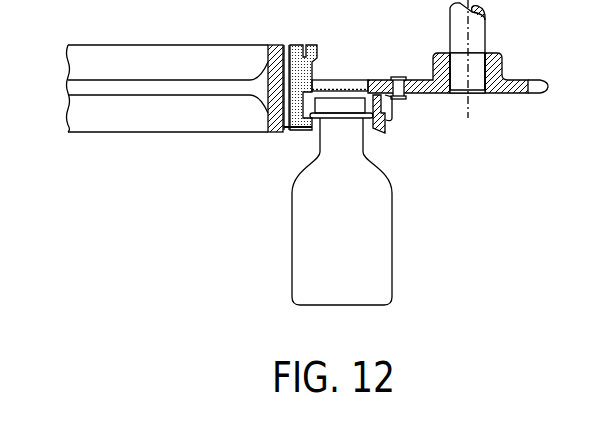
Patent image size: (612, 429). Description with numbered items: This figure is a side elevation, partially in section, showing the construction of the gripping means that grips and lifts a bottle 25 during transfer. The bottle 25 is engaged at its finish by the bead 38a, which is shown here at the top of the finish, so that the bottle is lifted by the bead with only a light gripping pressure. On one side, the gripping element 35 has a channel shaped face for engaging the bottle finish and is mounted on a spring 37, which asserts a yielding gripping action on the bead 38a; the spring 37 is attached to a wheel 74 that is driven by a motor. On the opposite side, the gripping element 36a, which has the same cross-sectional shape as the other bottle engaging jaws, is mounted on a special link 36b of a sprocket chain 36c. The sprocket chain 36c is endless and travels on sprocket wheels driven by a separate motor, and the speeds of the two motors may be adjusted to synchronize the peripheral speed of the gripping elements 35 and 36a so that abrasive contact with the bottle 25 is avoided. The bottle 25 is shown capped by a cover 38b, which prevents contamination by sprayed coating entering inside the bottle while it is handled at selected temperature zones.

The wheel 74 is at (110, 133).
The spring 37 is at (268, 131).
The clamping bar 35 is at (308, 58).
The cover 38b is at (340, 80).
The gripping element 36a is at (384, 134).
The special link 36b is at (388, 114).
The sprocket chain 36c is at (397, 77).
The bead 38a is at (316, 124).
The bottle 25 is at (392, 243).